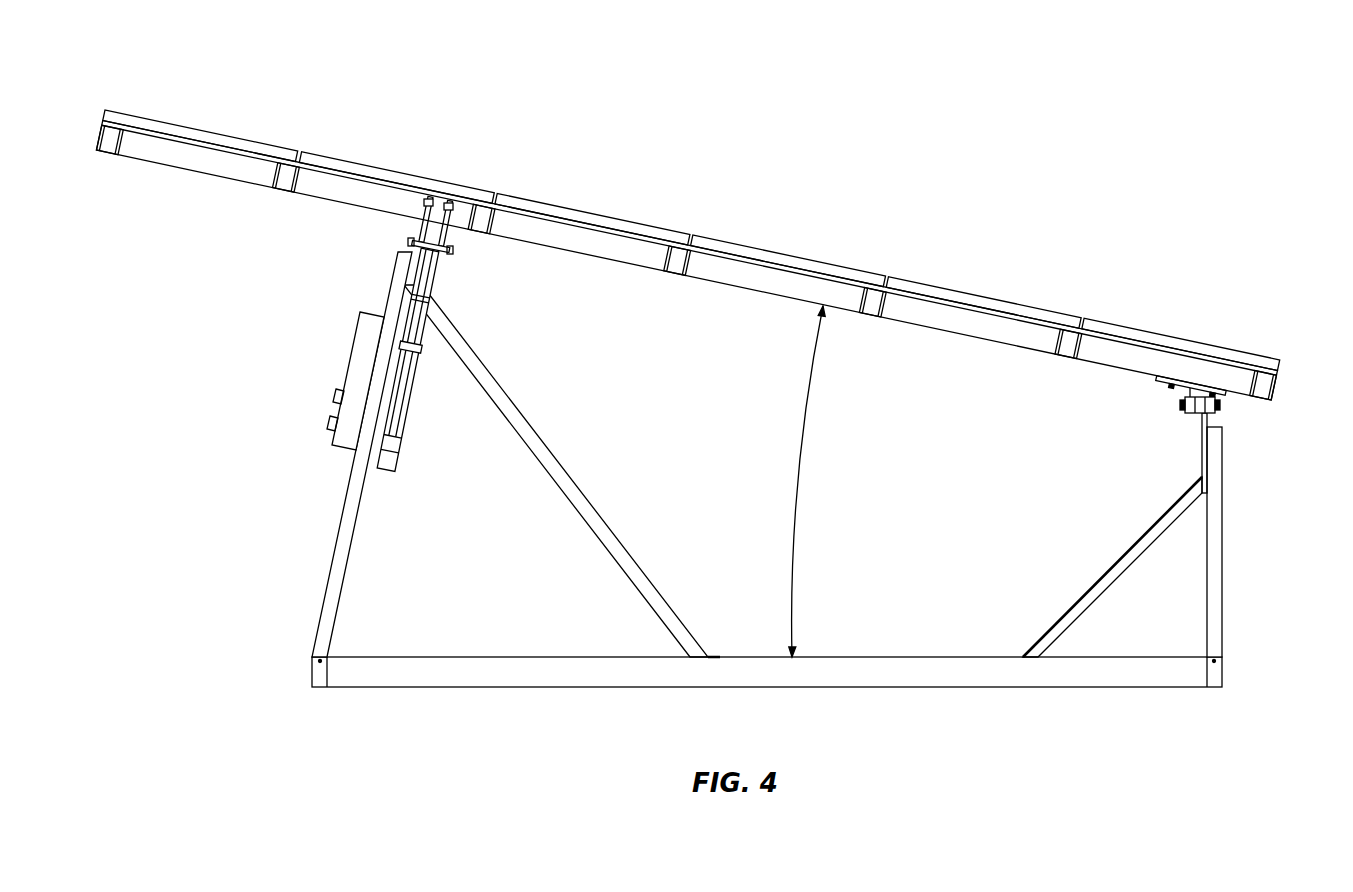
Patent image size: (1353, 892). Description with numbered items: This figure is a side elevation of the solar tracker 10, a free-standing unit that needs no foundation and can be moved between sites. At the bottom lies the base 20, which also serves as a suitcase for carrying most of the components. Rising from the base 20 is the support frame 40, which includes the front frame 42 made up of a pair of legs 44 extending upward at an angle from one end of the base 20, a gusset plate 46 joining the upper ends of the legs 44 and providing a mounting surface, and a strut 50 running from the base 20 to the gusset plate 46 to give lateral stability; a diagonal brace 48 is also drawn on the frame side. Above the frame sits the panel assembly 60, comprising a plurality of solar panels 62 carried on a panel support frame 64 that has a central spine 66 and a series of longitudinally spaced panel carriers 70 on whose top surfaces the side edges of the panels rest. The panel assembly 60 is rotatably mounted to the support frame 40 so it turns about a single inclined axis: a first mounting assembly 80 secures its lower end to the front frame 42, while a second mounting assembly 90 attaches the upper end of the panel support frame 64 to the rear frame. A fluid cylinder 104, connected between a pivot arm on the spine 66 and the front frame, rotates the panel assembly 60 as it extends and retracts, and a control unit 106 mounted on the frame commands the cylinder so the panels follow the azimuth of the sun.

The solar tracker 10 is at (838, 157).
The base 20 is at (462, 697).
The support frame 40 is at (318, 527).
The front frame 42 is at (1238, 624).
The legs 44 is at (1213, 590).
The gusset plate 46 is at (1203, 455).
The diagonal brace 48 is at (1112, 565).
The strut 50 is at (306, 605).
The panel assembly 60 is at (214, 108).
The solar panels 62 is at (401, 168).
The panel support frame 64 is at (195, 173).
The central spine 66 is at (990, 330).
The panel carriers 70 is at (101, 150).
The first mounting assembly 80 is at (1253, 418).
The second mounting assembly 90 is at (380, 231).
The fluid cylinder 104 is at (392, 410).
The control unit 106 is at (362, 347).